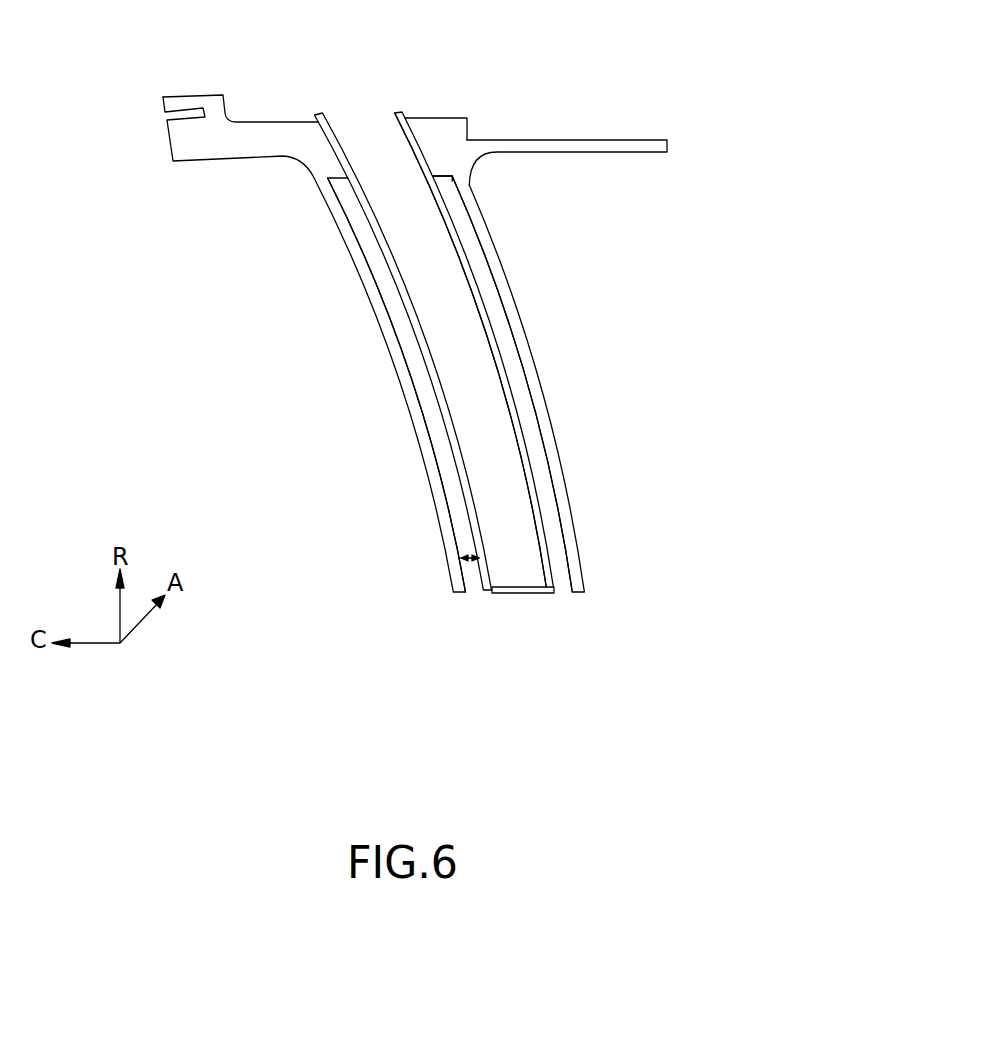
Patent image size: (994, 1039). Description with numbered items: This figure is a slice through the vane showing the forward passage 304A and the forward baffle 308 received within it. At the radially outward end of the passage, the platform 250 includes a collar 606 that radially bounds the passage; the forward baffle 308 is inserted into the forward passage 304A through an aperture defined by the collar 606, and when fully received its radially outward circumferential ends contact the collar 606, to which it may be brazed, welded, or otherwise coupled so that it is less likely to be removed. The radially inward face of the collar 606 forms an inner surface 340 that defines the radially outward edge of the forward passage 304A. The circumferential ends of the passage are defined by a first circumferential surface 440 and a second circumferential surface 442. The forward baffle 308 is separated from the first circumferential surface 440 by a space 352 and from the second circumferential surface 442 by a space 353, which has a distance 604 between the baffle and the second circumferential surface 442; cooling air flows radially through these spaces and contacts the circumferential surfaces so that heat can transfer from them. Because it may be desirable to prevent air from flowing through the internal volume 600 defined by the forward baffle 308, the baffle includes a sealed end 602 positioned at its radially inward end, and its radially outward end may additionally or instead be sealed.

The collar 606 is at (297, 130).
The forward baffle 308 is at (338, 138).
The platform 250 is at (477, 155).
The inner surface 340 is at (443, 177).
The second circumferential surface 442 is at (370, 272).
The internal volume 600 is at (453, 295).
The space 353 is at (405, 340).
The first circumferential surface 440 is at (530, 400).
The space 352 is at (548, 497).
The forward passage 304A is at (558, 542).
The distance 604 is at (477, 559).
The sealed end 602 is at (527, 593).